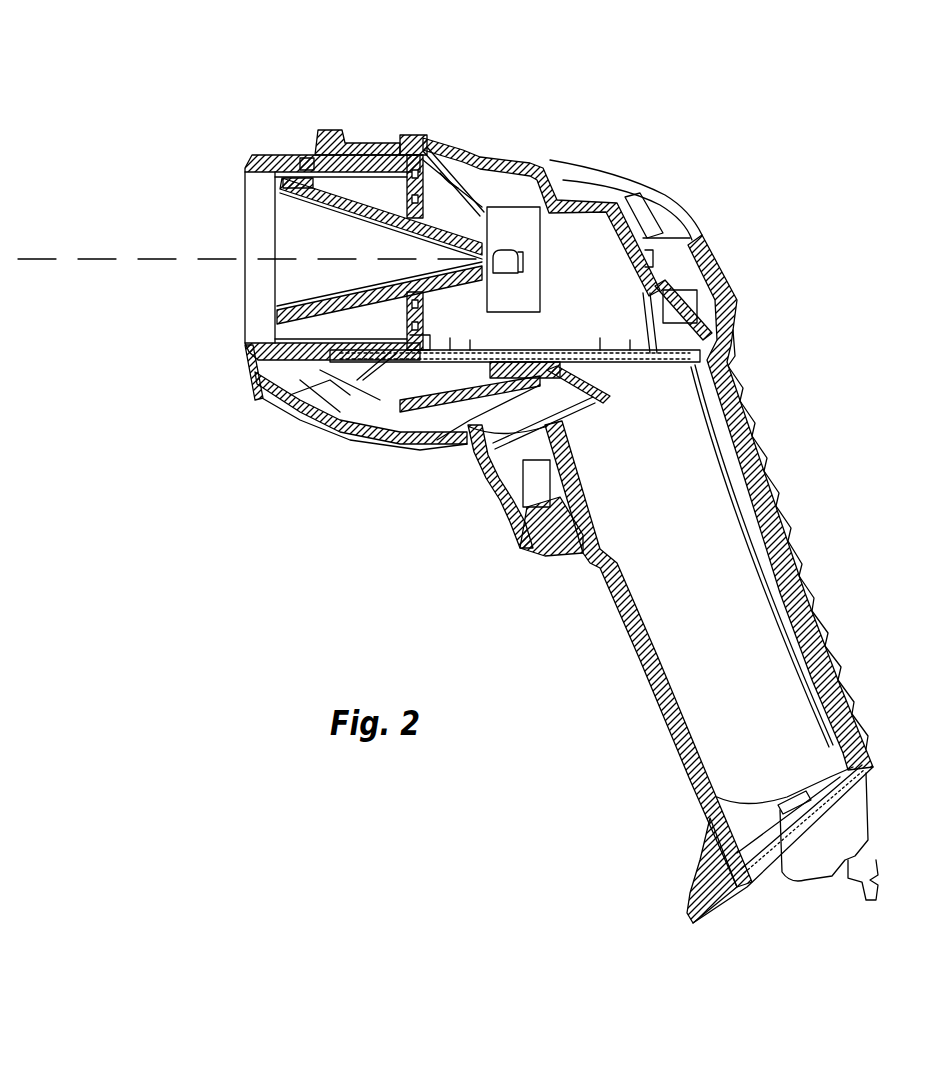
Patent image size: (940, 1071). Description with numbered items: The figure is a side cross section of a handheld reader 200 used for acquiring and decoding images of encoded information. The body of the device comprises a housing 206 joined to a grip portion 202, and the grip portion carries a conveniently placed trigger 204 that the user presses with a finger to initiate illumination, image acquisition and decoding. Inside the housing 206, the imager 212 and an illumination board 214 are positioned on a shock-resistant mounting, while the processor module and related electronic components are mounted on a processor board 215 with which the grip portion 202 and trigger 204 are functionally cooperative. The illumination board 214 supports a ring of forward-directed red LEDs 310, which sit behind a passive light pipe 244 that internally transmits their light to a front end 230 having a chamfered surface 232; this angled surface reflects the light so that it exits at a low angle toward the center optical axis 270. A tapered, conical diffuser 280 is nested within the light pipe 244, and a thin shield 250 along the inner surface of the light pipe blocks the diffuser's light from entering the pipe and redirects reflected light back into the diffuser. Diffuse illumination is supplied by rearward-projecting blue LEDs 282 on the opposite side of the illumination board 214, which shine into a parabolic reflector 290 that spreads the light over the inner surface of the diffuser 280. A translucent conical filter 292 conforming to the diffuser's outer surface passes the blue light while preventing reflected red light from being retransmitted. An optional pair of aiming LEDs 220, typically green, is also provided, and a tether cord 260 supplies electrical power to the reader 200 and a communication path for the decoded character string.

The reader 200 is at (732, 266).
The grip portion 202 is at (763, 477).
The trigger 204 is at (520, 552).
The housing 206 is at (493, 160).
The imager 212 is at (512, 215).
The illumination board 214 is at (423, 155).
The processor board 215 is at (703, 352).
The aiming LEDs 220 is at (514, 252).
The front end 230 is at (250, 158).
The chamfered surface 232 is at (260, 155).
The light pipe 244 is at (313, 155).
The shield 250 is at (307, 155).
The tether cord 260 is at (863, 872).
The optical axis 270 is at (95, 262).
The diffuser 280 is at (310, 420).
The diffuse illumination LEDs 282 is at (470, 155).
The reflector 290 is at (477, 200).
The filter 292 is at (280, 217).
The LEDs 310 is at (398, 153).